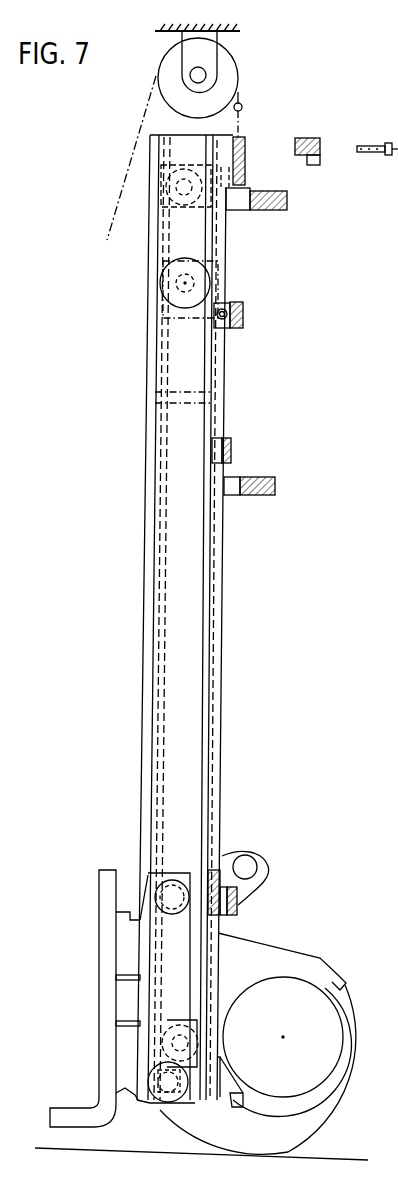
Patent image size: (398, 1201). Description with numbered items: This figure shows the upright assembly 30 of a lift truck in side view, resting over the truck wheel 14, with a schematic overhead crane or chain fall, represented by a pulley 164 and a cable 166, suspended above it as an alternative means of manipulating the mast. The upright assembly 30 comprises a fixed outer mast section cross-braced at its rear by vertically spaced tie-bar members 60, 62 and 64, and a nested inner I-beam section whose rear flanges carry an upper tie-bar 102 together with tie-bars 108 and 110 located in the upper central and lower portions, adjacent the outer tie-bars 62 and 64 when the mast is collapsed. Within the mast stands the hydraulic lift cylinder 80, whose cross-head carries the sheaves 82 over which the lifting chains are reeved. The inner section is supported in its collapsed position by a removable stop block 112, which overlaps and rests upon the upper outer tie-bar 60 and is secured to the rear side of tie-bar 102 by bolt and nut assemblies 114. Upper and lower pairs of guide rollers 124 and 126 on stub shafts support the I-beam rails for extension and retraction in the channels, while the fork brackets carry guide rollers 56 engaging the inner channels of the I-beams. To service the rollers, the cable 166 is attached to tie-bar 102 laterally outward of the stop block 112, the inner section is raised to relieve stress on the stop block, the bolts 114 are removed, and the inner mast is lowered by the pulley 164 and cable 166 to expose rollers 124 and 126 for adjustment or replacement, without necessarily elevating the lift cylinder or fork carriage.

The wheel 14 is at (218, 1125).
The upright assembly 30 is at (238, 613).
The guide rollers 56 is at (147, 865).
The tie-bar member 60 is at (290, 202).
The tie-bar member 62 is at (268, 480).
The tie-bar member 64 is at (240, 905).
The cylinder 80 is at (170, 428).
The sheaves 82 is at (168, 283).
The upper tie-bar member 102 is at (248, 163).
The tie-bar 108 is at (233, 447).
The tie-bar 110 is at (224, 858).
The stop block 112 is at (305, 138).
The bolt and nut assemblies 114 is at (369, 146).
The upper guide rollers 124 is at (158, 204).
The lower guide rollers 126 is at (175, 1043).
The pulley 164 is at (226, 72).
The cable 166 is at (244, 118).